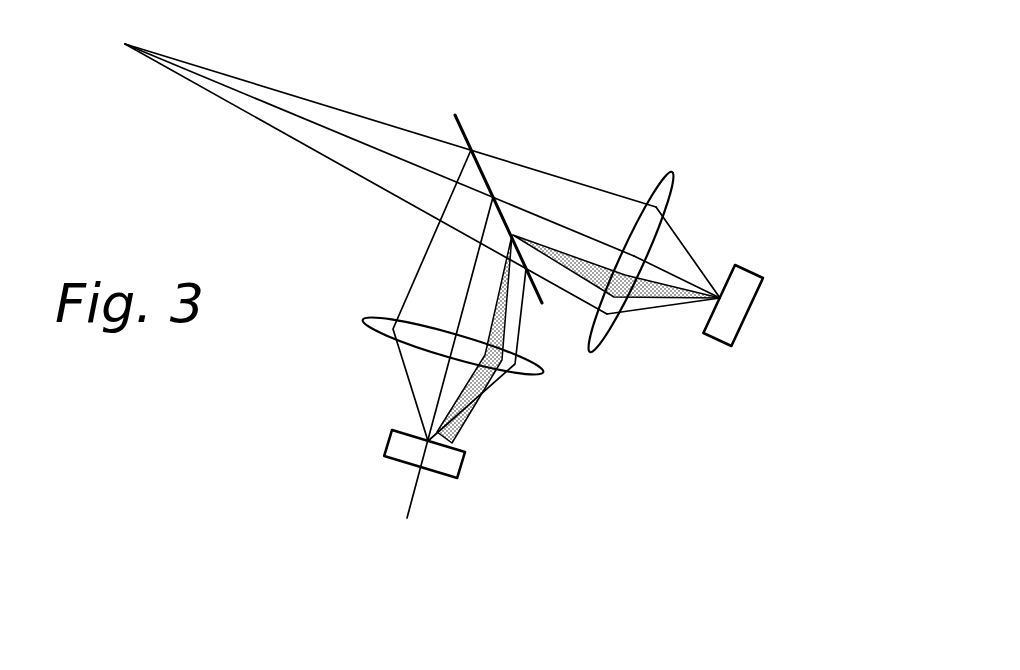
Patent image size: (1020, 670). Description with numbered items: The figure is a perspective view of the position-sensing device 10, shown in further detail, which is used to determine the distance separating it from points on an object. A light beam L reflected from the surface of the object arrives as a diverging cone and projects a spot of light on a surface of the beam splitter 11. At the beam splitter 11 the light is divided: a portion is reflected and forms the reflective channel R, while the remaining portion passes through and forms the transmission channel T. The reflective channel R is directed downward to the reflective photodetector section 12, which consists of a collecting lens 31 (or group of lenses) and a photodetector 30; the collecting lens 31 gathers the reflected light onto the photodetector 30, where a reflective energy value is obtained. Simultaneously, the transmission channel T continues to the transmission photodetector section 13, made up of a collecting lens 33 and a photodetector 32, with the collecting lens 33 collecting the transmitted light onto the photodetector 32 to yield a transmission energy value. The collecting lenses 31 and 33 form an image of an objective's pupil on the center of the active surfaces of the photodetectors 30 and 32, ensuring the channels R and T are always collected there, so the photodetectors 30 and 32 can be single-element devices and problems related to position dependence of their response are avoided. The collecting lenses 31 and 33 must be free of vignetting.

The position-sensing device 10 is at (578, 96).
The beam splitter 11 is at (470, 128).
The reflective photodetector section 12 is at (374, 372).
The transmission photodetector section 13 is at (718, 171).
The photodetector 30 is at (455, 462).
The collecting lens 31 is at (543, 375).
The photodetector 32 is at (744, 303).
The collecting lens 33 is at (658, 208).
The light beam L is at (377, 148).
The transmission channel T is at (584, 268).
The reflective channel R is at (492, 317).